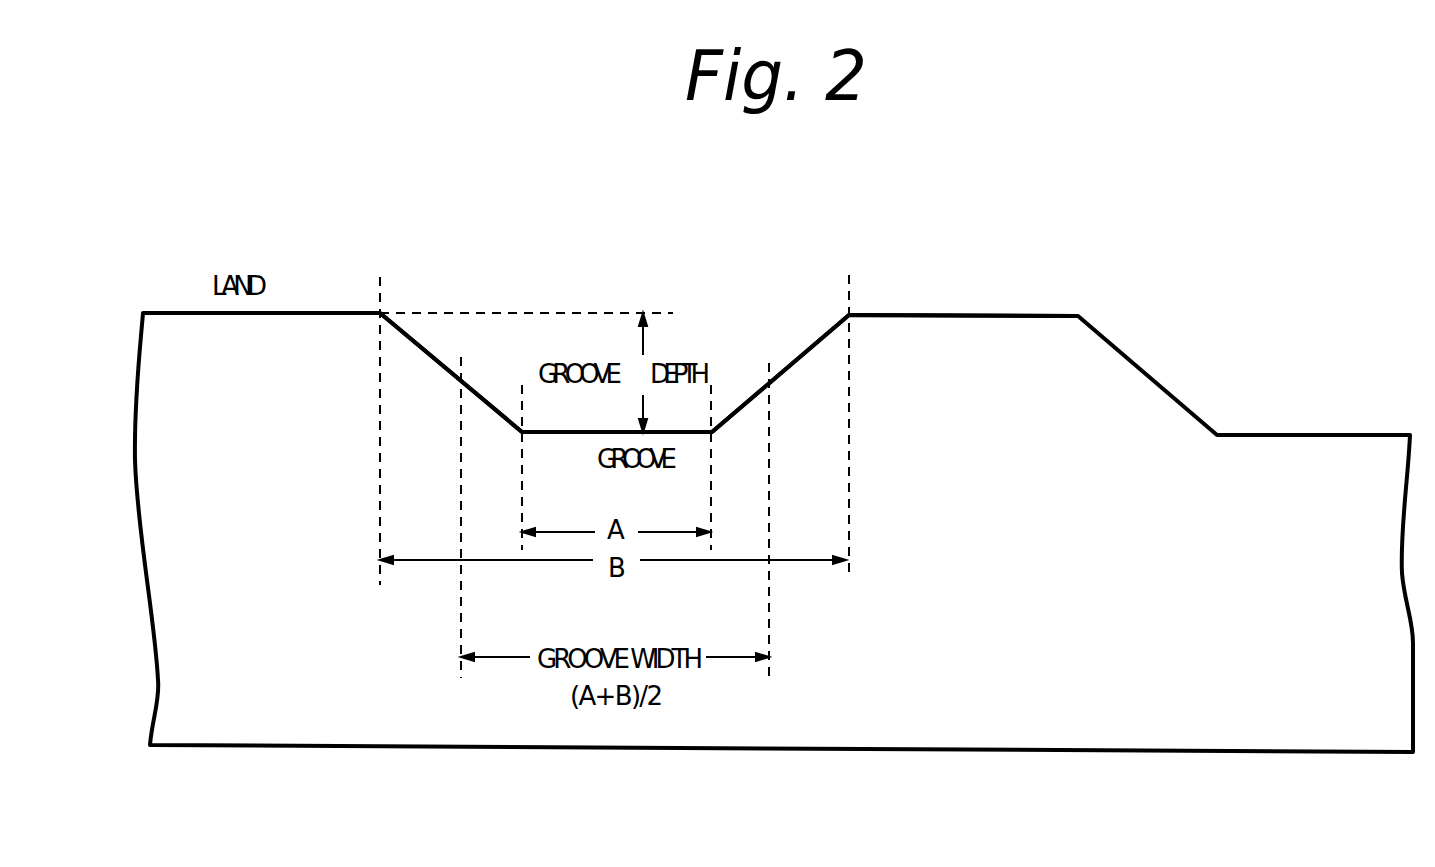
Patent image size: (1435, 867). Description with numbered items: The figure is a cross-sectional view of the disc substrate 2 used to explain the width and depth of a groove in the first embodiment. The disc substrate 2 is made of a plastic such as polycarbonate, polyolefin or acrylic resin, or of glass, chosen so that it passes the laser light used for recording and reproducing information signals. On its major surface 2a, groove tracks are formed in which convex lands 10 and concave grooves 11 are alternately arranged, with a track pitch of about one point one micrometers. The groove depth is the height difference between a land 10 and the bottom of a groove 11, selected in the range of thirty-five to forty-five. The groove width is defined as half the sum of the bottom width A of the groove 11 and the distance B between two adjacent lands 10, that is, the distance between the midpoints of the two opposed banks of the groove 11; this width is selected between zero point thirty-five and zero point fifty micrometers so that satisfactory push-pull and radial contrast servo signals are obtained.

The disc substrate 2 is at (1197, 730).
The major surface 2a is at (742, 313).
The land 10 is at (972, 316).
The groove 11 is at (1281, 435).